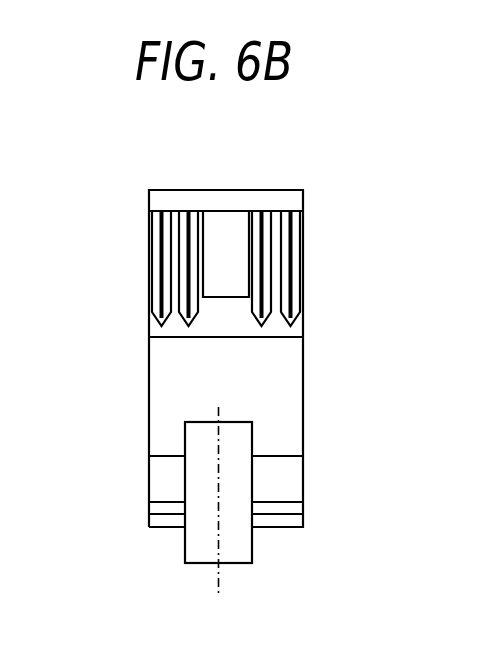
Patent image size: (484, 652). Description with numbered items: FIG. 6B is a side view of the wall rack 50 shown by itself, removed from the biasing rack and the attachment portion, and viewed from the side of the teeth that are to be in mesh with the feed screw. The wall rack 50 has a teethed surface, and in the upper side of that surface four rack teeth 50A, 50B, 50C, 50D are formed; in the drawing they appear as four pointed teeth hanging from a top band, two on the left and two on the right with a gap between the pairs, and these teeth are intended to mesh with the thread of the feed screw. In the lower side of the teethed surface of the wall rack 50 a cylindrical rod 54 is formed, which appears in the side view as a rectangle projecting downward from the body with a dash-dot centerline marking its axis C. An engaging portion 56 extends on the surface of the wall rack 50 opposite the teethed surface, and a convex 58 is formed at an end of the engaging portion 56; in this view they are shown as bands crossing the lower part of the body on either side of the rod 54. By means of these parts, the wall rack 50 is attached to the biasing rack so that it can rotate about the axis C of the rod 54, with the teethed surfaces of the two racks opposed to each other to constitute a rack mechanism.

The wall rack 50 is at (335, 197).
The rack tooth 50A is at (161, 237).
The rack tooth 50B is at (188, 275).
The rack tooth 50C is at (266, 285).
The rack tooth 50D is at (291, 239).
The cylindrical rod 54 is at (240, 550).
The engaging portion 56 is at (160, 479).
The convex 58 is at (165, 508).
The axis C is at (220, 520).